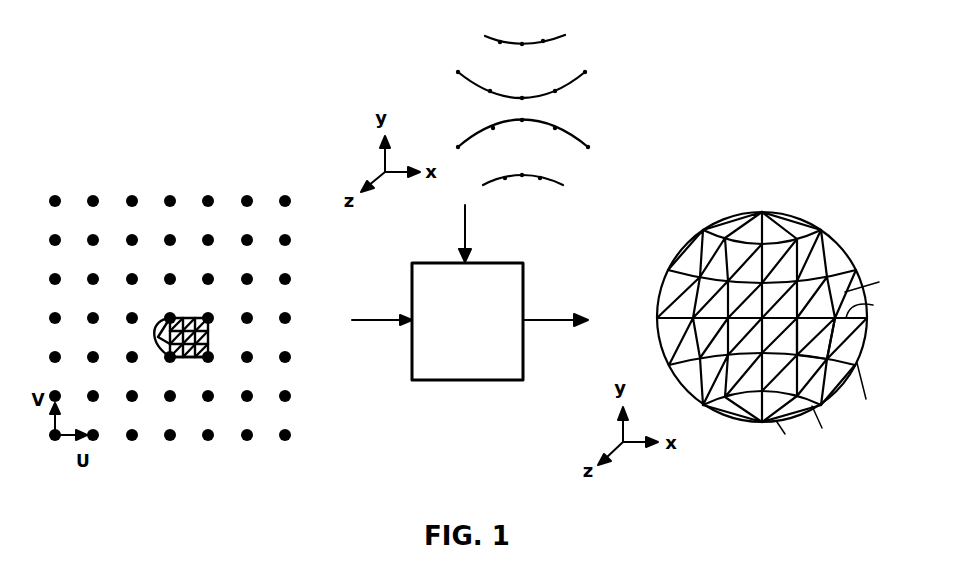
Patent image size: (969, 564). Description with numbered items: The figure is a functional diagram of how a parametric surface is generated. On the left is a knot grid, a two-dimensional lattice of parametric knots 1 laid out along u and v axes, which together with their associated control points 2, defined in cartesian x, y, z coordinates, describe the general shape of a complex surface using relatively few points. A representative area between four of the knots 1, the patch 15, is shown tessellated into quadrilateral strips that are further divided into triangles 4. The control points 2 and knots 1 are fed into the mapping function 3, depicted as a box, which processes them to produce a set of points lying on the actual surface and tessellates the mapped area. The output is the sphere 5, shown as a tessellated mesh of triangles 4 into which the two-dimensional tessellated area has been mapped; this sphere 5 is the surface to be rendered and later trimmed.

The knots 1 is at (55, 199).
The control points 2 is at (450, 68).
The mapping function 3 is at (461, 364).
The triangles 4 is at (505, 295).
The sphere 5 is at (776, 315).
The patch 15 is at (212, 341).